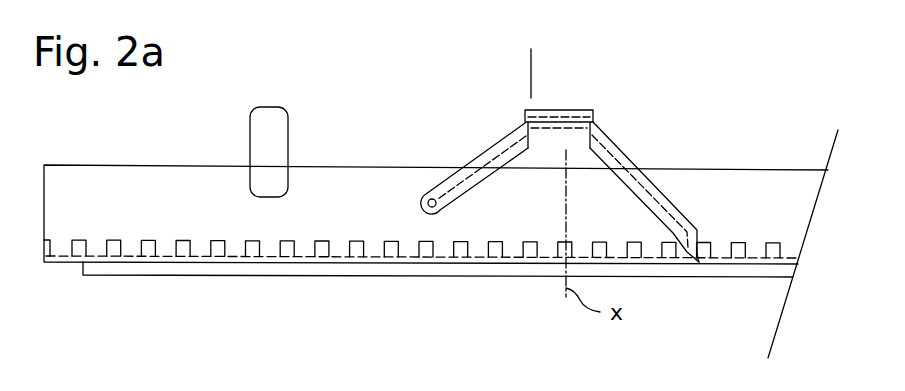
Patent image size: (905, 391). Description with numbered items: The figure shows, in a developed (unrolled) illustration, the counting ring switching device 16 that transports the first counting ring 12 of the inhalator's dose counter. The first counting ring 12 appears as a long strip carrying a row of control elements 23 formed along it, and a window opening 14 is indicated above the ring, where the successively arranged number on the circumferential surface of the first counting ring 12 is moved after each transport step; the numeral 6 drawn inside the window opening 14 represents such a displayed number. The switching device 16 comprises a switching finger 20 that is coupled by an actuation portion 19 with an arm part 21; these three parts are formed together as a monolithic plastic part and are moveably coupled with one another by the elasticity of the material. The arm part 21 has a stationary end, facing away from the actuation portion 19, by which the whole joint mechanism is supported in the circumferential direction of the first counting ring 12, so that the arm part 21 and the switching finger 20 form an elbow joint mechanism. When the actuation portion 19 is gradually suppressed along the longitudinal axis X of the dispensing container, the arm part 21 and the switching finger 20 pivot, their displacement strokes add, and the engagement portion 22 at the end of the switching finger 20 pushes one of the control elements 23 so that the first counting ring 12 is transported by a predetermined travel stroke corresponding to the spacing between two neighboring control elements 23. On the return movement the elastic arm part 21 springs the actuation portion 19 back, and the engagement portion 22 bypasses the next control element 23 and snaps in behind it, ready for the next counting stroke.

The first counting ring 12 is at (153, 185).
The window opening 14 is at (298, 136).
The marking 6 is at (270, 183).
The counting ring switching device 16 is at (607, 143).
The actuation portion 19 is at (565, 110).
The switching finger 20 is at (652, 185).
The arm part 21 is at (463, 178).
The engagement portion 22 is at (697, 240).
The control elements 23 is at (183, 250).